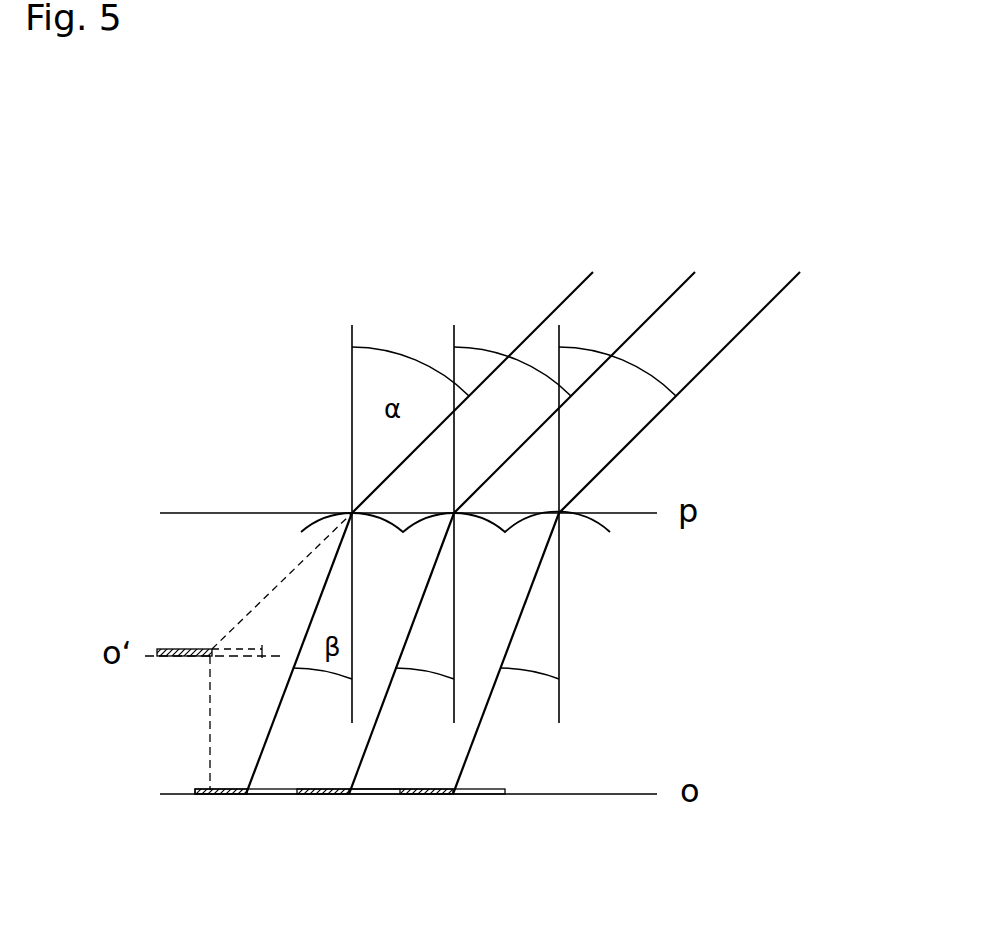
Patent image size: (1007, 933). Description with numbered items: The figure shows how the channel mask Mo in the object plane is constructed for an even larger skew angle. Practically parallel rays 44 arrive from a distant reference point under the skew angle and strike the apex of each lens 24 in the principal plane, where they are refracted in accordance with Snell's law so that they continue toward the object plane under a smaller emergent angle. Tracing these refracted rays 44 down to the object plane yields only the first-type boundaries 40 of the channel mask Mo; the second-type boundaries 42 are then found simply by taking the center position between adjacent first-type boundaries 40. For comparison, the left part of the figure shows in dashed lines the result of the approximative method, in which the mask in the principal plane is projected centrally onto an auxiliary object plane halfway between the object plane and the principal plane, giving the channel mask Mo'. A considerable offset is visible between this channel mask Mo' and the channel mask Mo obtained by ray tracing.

The rays 44 is at (568, 293).
The lens 24 is at (597, 530).
The first-type boundaries 40 is at (348, 795).
The second-type boundaries 42 is at (400, 795).
The channel mask Mo is at (220, 843).
The channel mask Mo' is at (172, 608).